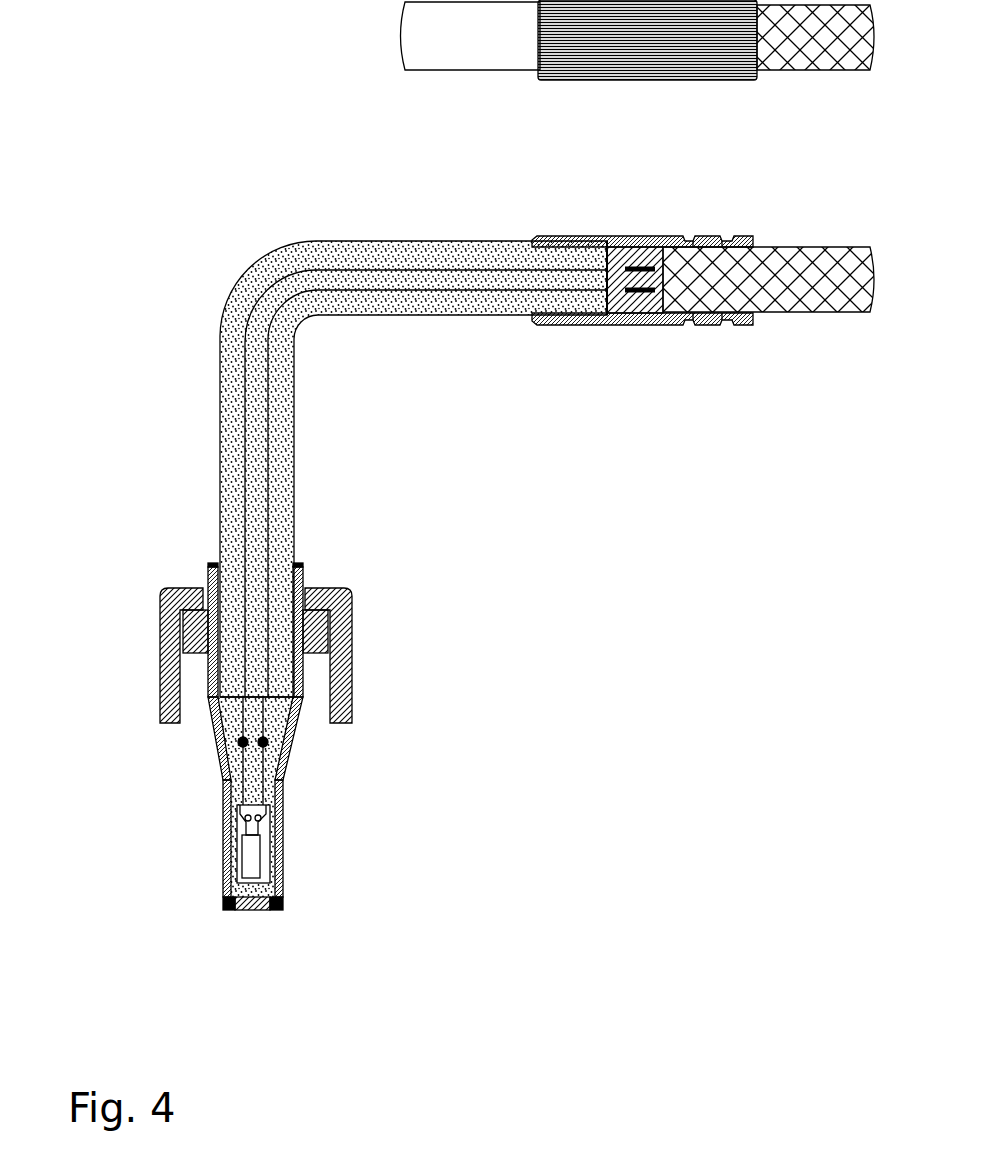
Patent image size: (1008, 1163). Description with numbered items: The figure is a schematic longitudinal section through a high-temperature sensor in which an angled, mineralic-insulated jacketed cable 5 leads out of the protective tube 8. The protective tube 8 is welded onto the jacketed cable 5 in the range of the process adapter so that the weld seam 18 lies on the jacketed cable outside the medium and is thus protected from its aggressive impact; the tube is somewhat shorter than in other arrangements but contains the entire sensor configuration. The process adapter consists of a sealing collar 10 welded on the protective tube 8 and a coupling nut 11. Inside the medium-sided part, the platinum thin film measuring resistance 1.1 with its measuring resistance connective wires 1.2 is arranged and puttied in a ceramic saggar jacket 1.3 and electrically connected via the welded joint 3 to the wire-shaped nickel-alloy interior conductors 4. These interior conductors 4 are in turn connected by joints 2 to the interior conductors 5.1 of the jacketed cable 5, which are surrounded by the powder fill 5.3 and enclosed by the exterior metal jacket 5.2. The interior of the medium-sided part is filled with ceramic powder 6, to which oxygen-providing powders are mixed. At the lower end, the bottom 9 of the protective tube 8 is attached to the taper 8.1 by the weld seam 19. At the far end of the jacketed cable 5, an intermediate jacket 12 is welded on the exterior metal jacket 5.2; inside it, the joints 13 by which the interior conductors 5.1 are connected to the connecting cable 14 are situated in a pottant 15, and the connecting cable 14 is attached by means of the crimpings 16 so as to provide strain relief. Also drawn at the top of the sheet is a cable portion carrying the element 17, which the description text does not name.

The platinum thin film measuring resistance 1.1 is at (262, 872).
The measuring resistance connective wires 1.2 is at (262, 822).
The ceramic saggar jacket 1.3 is at (266, 847).
The joints 2 is at (270, 740).
The welded joint 3 is at (245, 818).
The interior conductors 4 is at (283, 775).
The jacketed cable 5 is at (462, 67).
The interior conductors of the jacketed cable 5.1 is at (243, 719).
The exterior metal jacket 5.2 is at (293, 452).
The powder fill 5.3 is at (277, 503).
The ceramic powder 6 is at (235, 762).
The protective tube 8 is at (305, 577).
The taper 8.1 is at (228, 851).
The bottom 9 is at (235, 910).
The sealing collar 10 is at (315, 627).
The coupling nut 11 is at (173, 635).
The intermediate jacket 12 is at (533, 238).
The joints 13 is at (652, 320).
The connecting cable 14 is at (800, 310).
The pottant 15 is at (608, 320).
The crimpings 16 is at (728, 242).
The cable shield 17 is at (620, 68).
The weld seam 18 is at (212, 564).
The weld seam 19 is at (280, 912).